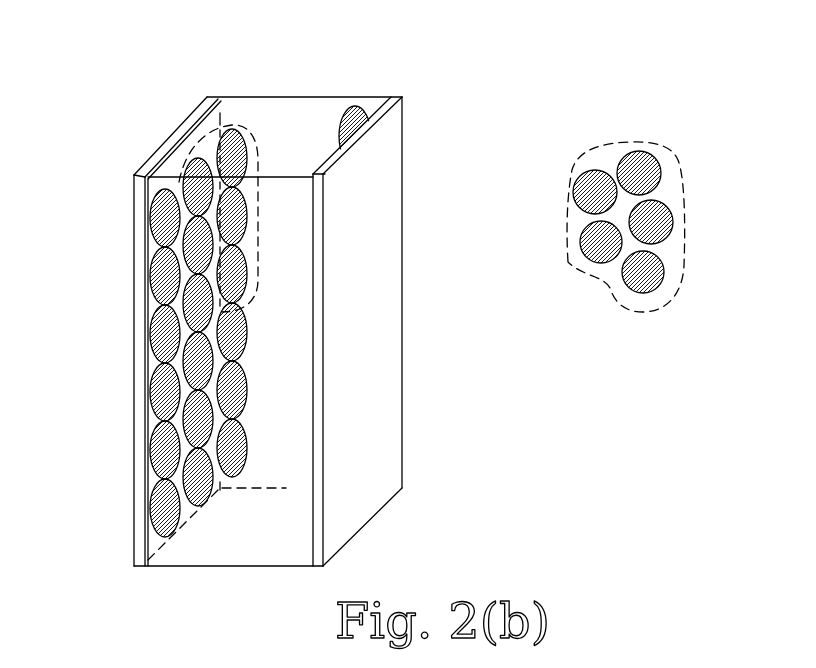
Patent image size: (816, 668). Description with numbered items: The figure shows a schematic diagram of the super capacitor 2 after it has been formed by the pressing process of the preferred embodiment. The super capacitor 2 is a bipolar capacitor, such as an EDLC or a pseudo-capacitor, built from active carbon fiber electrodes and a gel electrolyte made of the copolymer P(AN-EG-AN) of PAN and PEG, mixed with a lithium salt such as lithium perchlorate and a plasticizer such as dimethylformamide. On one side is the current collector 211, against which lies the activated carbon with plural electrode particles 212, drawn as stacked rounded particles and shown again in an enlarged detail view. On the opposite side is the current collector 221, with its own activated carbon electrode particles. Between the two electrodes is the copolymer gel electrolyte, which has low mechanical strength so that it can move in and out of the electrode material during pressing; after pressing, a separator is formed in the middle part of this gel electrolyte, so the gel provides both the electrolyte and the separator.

The super capacitor 2 is at (240, 128).
The current collector 211 is at (142, 225).
The activated carbon with plural electrode particles 212 is at (163, 278).
The current collector 221 is at (387, 268).